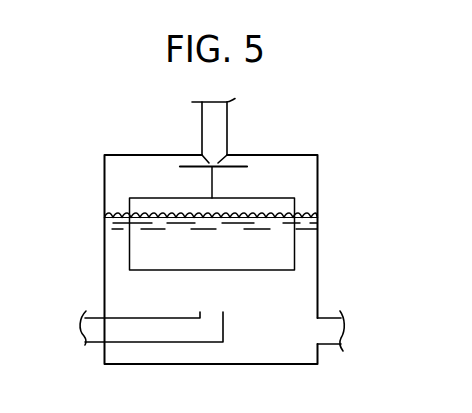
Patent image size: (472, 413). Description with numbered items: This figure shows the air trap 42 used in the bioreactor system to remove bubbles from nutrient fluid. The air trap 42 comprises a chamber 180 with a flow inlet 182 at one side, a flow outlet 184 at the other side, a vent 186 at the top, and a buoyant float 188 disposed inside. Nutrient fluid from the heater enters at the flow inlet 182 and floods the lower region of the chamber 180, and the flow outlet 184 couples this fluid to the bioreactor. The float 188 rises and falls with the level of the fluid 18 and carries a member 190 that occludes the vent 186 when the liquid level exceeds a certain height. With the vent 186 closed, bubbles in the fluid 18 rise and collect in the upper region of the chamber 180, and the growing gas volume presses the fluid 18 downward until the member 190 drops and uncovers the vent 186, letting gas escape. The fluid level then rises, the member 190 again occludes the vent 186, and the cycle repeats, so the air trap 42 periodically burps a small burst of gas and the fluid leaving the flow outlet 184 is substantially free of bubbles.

The air trap 42 is at (148, 120).
The fluid 18 is at (280, 304).
The chamber 180 is at (318, 192).
The flow inlet 182 is at (85, 345).
The flow outlet 184 is at (338, 344).
The vent 186 is at (227, 125).
The float 188 is at (295, 253).
The member 190 is at (183, 168).